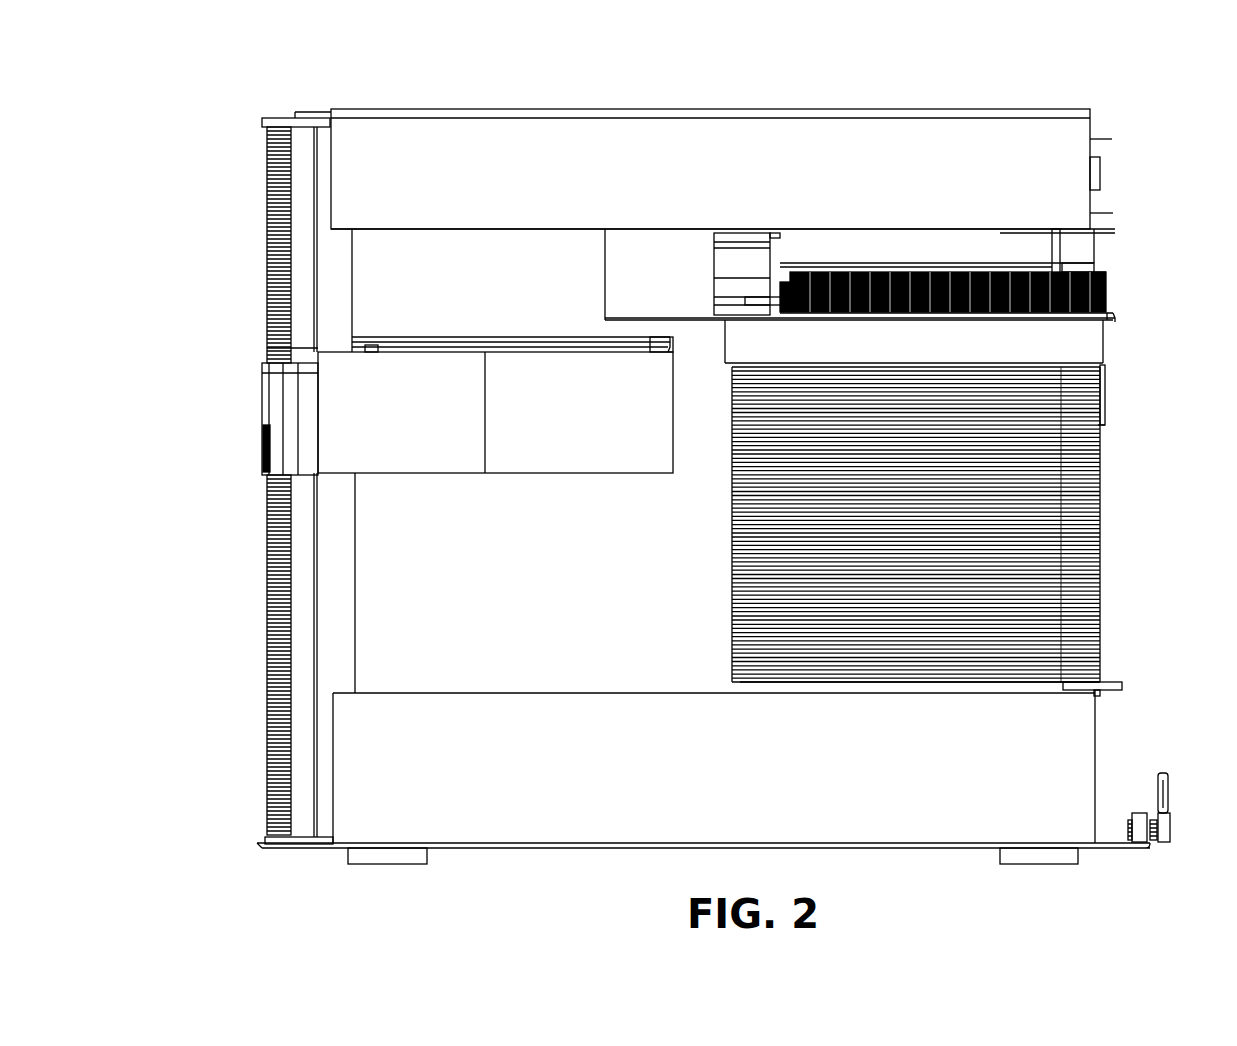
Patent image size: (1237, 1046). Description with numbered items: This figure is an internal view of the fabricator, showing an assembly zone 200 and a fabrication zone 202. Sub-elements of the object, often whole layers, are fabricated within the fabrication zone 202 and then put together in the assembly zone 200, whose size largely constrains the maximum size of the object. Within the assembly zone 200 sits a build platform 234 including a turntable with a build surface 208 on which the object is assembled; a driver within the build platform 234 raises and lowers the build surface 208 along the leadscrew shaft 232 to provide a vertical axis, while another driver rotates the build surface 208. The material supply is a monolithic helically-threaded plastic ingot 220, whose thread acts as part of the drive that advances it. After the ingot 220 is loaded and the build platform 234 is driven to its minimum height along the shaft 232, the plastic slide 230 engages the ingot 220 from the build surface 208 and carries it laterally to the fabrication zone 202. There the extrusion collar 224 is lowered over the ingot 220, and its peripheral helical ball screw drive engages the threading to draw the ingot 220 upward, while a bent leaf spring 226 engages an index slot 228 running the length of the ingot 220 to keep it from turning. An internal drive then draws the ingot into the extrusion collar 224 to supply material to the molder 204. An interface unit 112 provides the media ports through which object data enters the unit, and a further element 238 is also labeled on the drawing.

The assembly zone 200 is at (471, 306).
The fabrication zone 202 is at (1115, 258).
The molder 204 is at (1083, 243).
The build surface 208 is at (505, 337).
The helically-threaded plastic ingot 220 is at (1100, 492).
The extrusion collar 224 is at (1093, 333).
The bent leaf spring 226 is at (1105, 395).
The index slot 228 is at (727, 275).
The plastic slide 230 is at (1060, 690).
The leadscrew shaft 232 is at (265, 575).
The build platform 234 is at (675, 410).
The fin edge 238 is at (1100, 428).
The interface unit 112 is at (1170, 825).